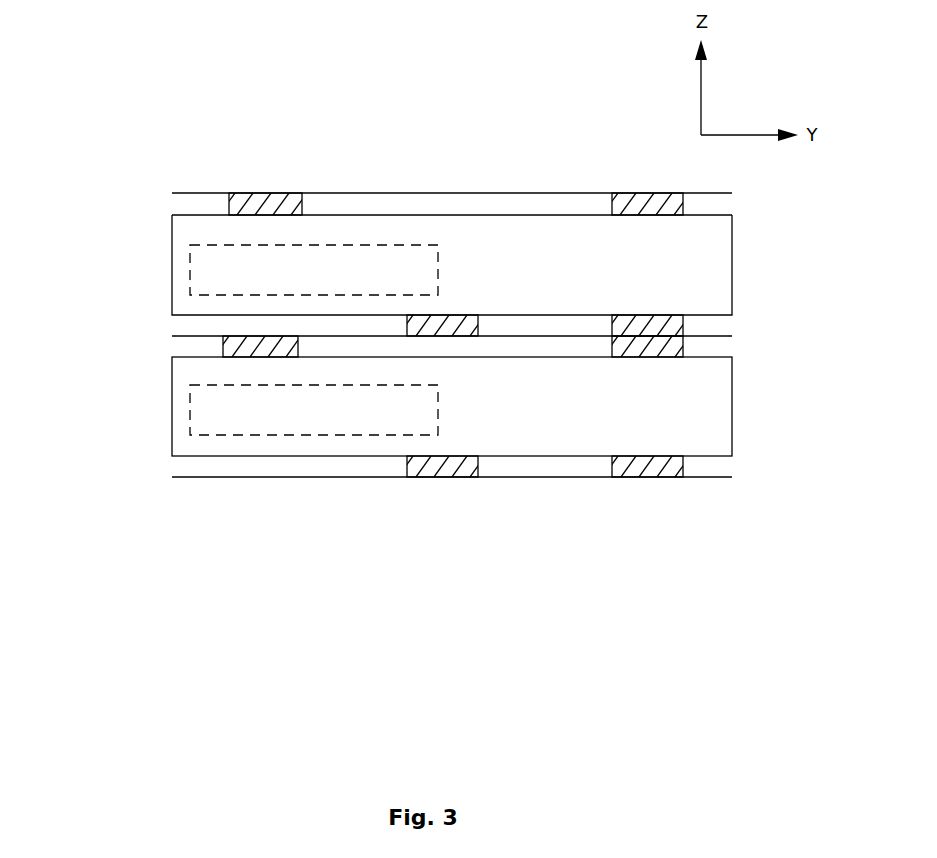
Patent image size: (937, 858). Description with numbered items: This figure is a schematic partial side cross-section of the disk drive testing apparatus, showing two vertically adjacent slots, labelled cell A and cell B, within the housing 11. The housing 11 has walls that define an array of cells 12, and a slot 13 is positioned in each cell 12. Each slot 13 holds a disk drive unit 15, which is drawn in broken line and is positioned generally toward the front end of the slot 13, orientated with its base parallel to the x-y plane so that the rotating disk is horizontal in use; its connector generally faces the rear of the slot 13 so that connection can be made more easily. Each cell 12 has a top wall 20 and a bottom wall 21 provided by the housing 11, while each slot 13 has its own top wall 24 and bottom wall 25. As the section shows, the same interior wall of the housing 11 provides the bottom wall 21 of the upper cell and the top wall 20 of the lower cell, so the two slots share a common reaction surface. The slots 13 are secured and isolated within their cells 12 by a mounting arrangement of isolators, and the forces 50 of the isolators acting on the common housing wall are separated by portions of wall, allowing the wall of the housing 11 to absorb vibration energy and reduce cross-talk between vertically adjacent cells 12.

The housing 11 is at (185, 188).
The cell 12 is at (183, 202).
The slot 13 is at (163, 243).
The disk drive unit 15 is at (190, 278).
The top wall 20 is at (360, 215).
The bottom wall 21 is at (190, 335).
The top wall 24 is at (390, 215).
The bottom wall 25 is at (707, 315).
The forces 50 is at (463, 333).